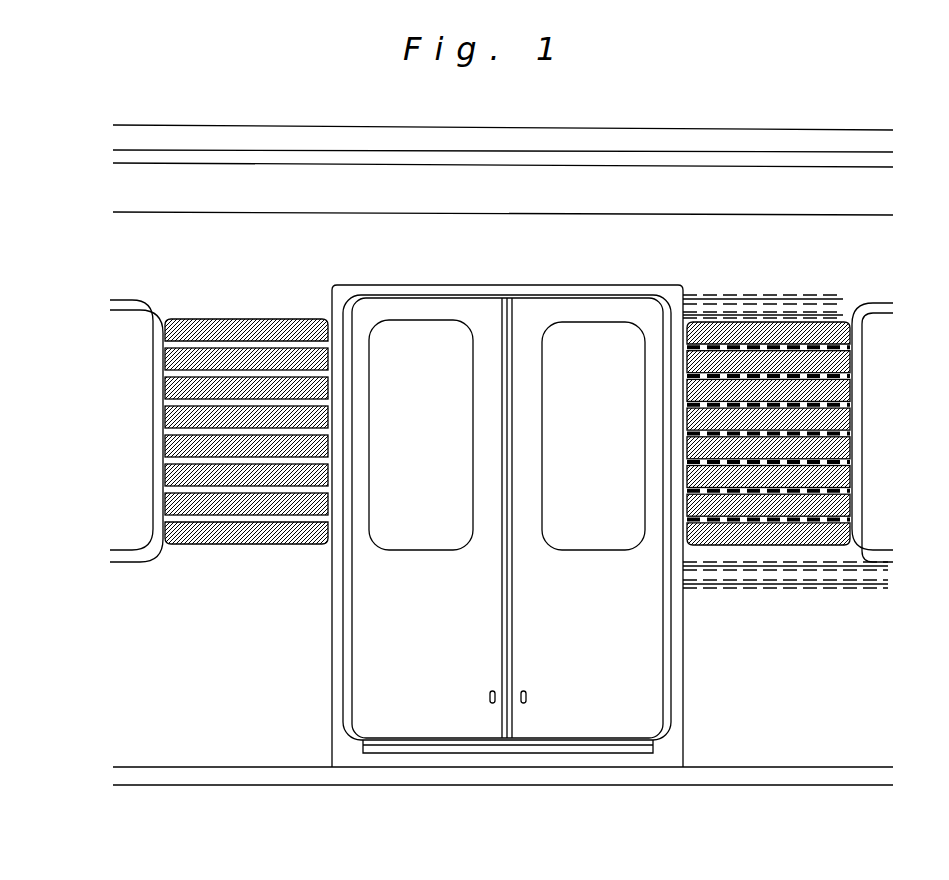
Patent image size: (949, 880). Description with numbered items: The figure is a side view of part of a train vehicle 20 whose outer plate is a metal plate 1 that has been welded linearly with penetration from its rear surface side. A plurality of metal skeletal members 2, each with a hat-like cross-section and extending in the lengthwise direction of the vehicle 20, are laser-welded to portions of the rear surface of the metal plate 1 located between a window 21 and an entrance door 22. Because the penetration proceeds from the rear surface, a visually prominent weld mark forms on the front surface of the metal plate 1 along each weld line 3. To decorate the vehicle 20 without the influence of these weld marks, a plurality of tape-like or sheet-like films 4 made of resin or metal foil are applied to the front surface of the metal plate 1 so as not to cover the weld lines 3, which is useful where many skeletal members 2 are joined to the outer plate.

The metal plate 1 is at (776, 278).
The skeletal member 2 is at (843, 343).
The weld line 3 is at (785, 372).
The film 4 is at (235, 508).
The vehicle 20 is at (786, 122).
The window 21 is at (140, 494).
The entrance door 22 is at (358, 664).